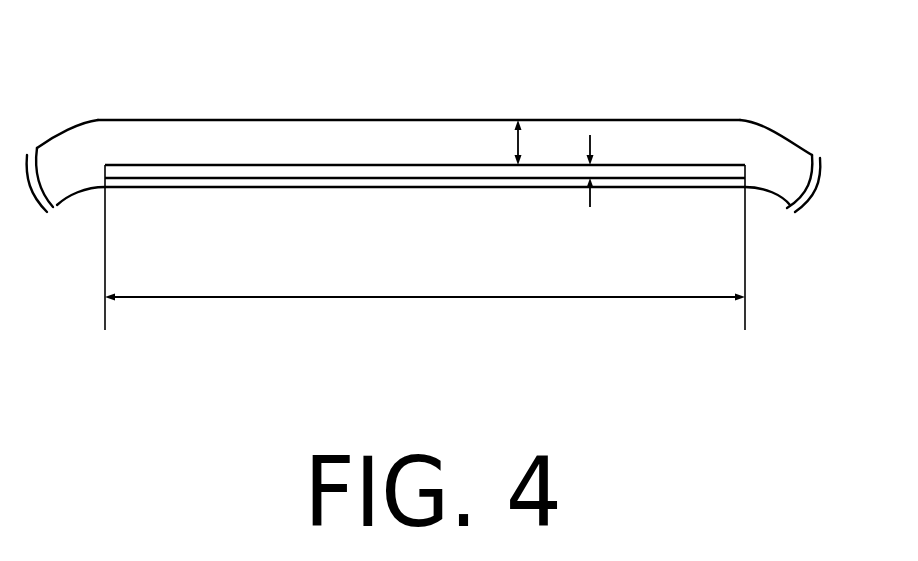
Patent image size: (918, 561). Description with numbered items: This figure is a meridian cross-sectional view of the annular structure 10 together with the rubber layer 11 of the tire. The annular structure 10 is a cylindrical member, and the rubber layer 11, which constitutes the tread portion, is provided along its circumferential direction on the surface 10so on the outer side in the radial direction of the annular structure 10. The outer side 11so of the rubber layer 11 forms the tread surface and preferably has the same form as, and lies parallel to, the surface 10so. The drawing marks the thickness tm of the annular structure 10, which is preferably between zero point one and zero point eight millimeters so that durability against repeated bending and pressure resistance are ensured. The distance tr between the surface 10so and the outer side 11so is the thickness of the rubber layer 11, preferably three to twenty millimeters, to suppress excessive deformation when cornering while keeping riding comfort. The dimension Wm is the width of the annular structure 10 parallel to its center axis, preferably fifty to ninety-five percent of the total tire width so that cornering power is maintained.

The annular structure 10 is at (425, 189).
The surface on the outer side in the radial direction of the annular structure 10so is at (264, 157).
The rubber layer 11 is at (424, 130).
The outer side of the rubber layer 11so is at (588, 116).
The distance between the annular structure surface and the rubber layer outer side tr is at (516, 152).
The thickness of the annular structure tm is at (591, 172).
The dimension in the width direction of the annular structure Wm is at (425, 315).